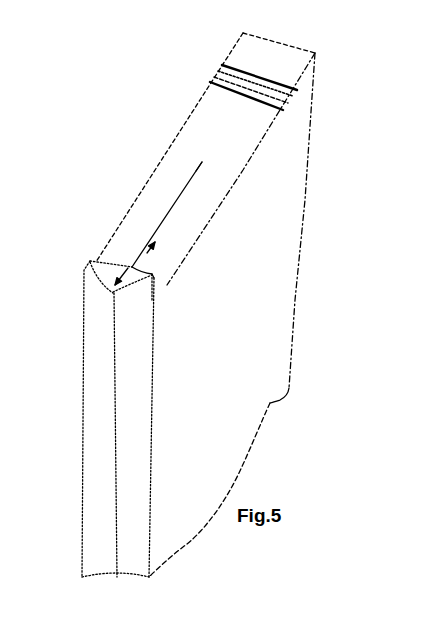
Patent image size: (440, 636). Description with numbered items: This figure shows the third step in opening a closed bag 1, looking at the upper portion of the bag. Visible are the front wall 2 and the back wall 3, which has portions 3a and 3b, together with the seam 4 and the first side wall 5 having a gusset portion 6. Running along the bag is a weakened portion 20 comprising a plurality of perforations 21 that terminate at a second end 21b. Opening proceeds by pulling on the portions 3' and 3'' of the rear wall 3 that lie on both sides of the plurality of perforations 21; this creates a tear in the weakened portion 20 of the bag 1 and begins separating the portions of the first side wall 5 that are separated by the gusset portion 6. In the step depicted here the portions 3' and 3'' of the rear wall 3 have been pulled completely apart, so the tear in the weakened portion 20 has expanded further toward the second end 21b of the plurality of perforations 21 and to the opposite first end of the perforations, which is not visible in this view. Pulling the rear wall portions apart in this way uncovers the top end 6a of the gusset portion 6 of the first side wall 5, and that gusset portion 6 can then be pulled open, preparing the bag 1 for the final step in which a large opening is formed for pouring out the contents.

The bag 1 is at (137, 132).
The front wall 2 is at (290, 239).
The back wall 3 is at (205, 159).
The portion of the rear wall 3' is at (154, 263).
The portion of the rear wall 3'' is at (105, 244).
The portion of the back wall 3a is at (158, 287).
The portion of the back wall 3b is at (303, 65).
The seam 4 is at (222, 78).
The first side wall 5 is at (135, 383).
The gusset portion 6 is at (117, 438).
The top end of the gusset portion 6a is at (113, 293).
The weakened portion 20 is at (182, 180).
The plurality of perforations 21 is at (172, 210).
The second end of the plurality of perforations 21b is at (202, 162).